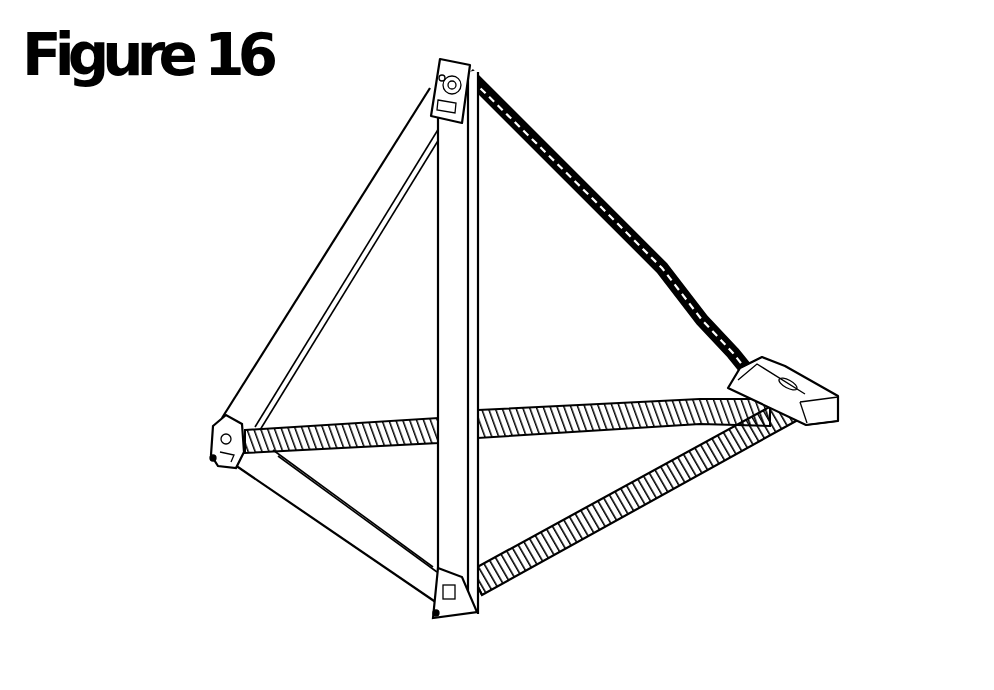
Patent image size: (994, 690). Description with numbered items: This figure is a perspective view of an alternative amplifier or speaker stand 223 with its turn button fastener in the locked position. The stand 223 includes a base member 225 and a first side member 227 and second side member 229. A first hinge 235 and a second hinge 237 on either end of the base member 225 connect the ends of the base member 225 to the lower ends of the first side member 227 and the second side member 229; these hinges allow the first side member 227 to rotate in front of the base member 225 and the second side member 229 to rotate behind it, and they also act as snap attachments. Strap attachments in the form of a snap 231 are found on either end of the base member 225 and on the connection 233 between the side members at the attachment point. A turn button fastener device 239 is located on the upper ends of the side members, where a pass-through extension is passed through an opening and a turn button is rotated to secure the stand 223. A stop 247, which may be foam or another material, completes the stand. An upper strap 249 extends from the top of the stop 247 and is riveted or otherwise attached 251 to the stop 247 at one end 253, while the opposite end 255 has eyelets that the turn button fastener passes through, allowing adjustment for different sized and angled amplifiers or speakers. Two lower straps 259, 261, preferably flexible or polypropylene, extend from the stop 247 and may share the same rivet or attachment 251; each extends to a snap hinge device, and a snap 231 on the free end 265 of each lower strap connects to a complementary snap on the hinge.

The stand 223 is at (222, 226).
The base member 225 is at (310, 521).
The first side member 227 is at (478, 235).
The second side member 229 is at (293, 308).
The snap 231 is at (196, 459).
The connection 233 is at (468, 67).
The first hinge 235 is at (490, 623).
The second hinge 237 is at (194, 435).
The turn button fastener device 239 is at (419, 73).
The stop 247 is at (820, 428).
The upper strap 249 is at (681, 261).
The rivet or attachment 251 is at (797, 373).
The one end of the upper strap 253 is at (744, 362).
The opposite end of the upper strap 255 is at (488, 98).
The lower strap 259 is at (681, 500).
The lower strap 261 is at (544, 450).
The free end 265 is at (257, 433).